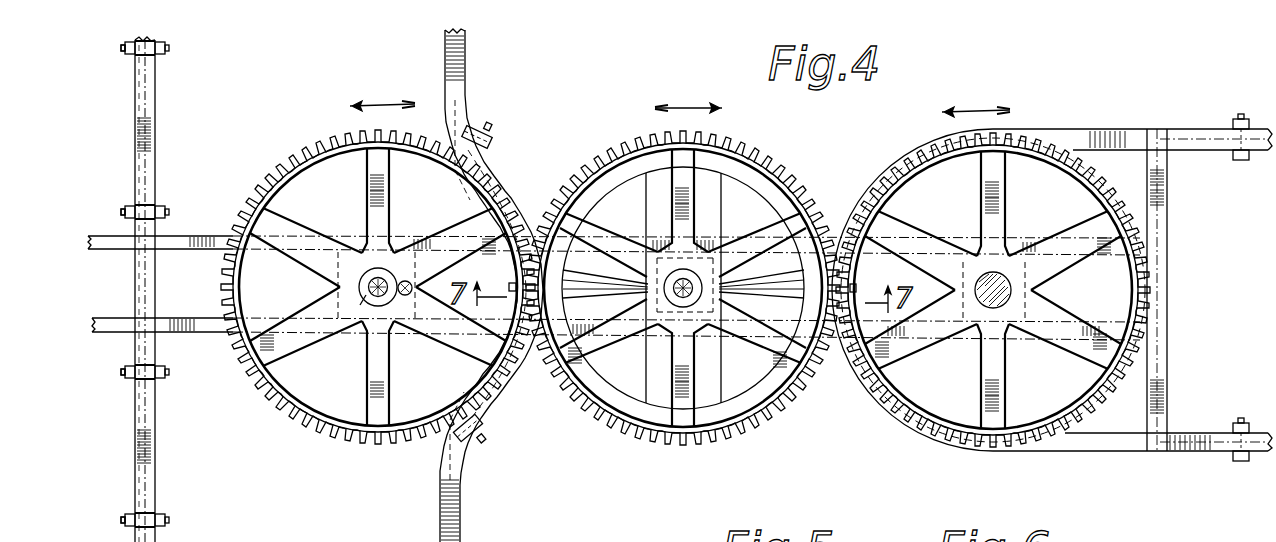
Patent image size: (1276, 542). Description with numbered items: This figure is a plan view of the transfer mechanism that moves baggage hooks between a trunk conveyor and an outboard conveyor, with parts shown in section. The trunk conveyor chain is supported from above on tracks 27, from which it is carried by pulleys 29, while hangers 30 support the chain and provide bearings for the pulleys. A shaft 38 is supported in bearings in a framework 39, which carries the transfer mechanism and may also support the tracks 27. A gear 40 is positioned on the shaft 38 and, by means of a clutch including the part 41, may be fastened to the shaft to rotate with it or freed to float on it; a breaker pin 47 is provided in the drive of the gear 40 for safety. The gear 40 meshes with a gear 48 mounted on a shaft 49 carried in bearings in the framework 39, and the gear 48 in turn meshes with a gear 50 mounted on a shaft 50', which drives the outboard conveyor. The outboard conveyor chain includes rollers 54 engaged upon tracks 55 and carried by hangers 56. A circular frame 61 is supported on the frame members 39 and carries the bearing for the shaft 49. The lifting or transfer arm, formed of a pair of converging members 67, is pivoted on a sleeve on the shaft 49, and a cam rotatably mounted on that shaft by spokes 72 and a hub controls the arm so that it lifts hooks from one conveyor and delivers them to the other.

The track 27 is at (150, 426).
The pulley 29 is at (128, 44).
The hanger 30 is at (128, 56).
The shaft 38 is at (384, 272).
The framework 39 is at (198, 234).
The gear 40 is at (320, 432).
The clutch part 41 is at (366, 300).
The breaker pin 47 is at (405, 298).
The gear 48 is at (694, 442).
The shaft 49 is at (682, 300).
The gear 50 is at (993, 306).
The shaft 50' is at (1038, 290).
The roller 54 is at (1236, 120).
The track 55 is at (1085, 446).
The hanger 56 is at (1243, 116).
The circular frame 61 is at (628, 402).
The transfer arm member 67 is at (612, 296).
The spoke 72 is at (596, 290).